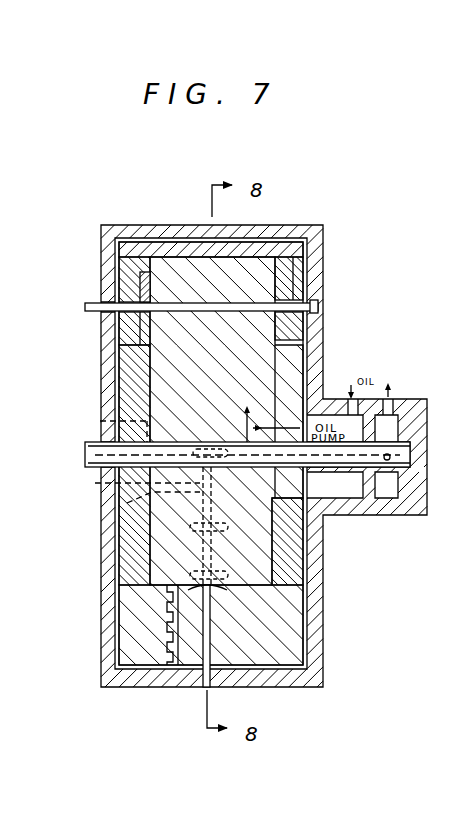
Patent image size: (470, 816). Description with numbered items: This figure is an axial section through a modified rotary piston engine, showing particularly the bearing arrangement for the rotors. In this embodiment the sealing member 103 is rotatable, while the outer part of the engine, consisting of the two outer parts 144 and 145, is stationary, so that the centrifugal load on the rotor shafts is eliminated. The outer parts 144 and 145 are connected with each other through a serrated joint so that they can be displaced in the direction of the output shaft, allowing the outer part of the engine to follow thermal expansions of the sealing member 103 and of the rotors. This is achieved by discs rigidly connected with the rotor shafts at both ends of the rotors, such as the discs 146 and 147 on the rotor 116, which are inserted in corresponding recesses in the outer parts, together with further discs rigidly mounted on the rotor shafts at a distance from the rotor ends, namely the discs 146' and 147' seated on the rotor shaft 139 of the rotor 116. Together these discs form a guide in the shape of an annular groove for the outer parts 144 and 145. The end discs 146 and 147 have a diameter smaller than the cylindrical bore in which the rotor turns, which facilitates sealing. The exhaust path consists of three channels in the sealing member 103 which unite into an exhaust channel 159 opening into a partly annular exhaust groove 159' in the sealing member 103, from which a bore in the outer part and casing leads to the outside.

The sealing member 103 is at (163, 378).
The rotor 116 is at (199, 257).
The rotor shaft 139 is at (95, 316).
The outer part 144 is at (293, 242).
The outer part 145 is at (136, 240).
The disc 146 is at (326, 278).
The disc 146' is at (330, 326).
The disc 147 is at (98, 282).
The disc 147' is at (97, 335).
The exhaust channel 159 is at (136, 568).
The exhaust groove 159' is at (115, 509).